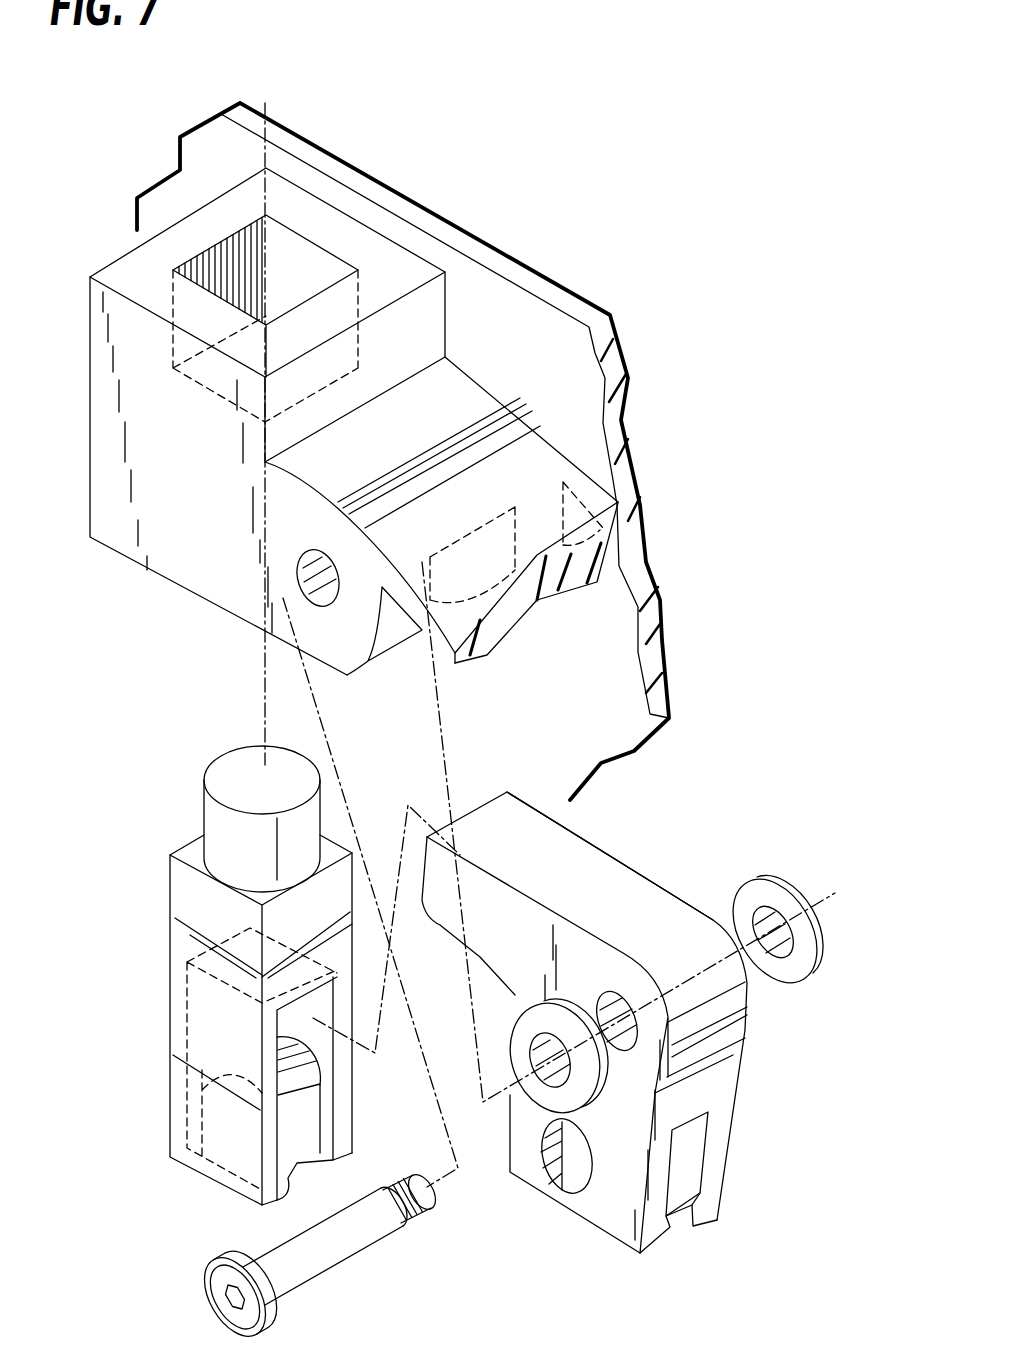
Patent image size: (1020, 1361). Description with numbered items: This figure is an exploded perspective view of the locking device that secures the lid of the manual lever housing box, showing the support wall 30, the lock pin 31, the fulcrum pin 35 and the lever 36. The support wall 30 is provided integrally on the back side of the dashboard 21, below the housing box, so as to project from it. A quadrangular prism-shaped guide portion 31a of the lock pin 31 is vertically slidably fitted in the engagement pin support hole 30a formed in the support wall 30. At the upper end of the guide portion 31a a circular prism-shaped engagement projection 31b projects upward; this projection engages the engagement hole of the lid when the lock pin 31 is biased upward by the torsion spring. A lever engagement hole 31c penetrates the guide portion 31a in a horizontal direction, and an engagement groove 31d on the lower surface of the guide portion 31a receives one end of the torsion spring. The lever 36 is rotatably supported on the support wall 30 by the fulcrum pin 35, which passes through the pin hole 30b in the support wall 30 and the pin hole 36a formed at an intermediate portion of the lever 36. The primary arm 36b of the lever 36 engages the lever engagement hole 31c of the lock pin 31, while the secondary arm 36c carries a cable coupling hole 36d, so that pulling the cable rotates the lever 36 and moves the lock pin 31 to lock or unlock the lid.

The dashboard 21 is at (548, 270).
The support wall 30 is at (245, 560).
The engagement pin support hole 30a is at (298, 255).
The pin hole 30b is at (327, 595).
The lock pin 31 is at (219, 996).
The guide portion 31a is at (184, 903).
The engagement projection 31b is at (224, 820).
The lever engagement hole 31c is at (345, 1037).
The engagement groove 31d is at (288, 1170).
The fulcrum pin 35 is at (330, 1257).
The lever 36 is at (670, 872).
The pin hole 36a is at (617, 1006).
The primary arm 36b is at (525, 818).
The secondary arm 36c is at (625, 1142).
The cable coupling hole 36d is at (568, 1150).